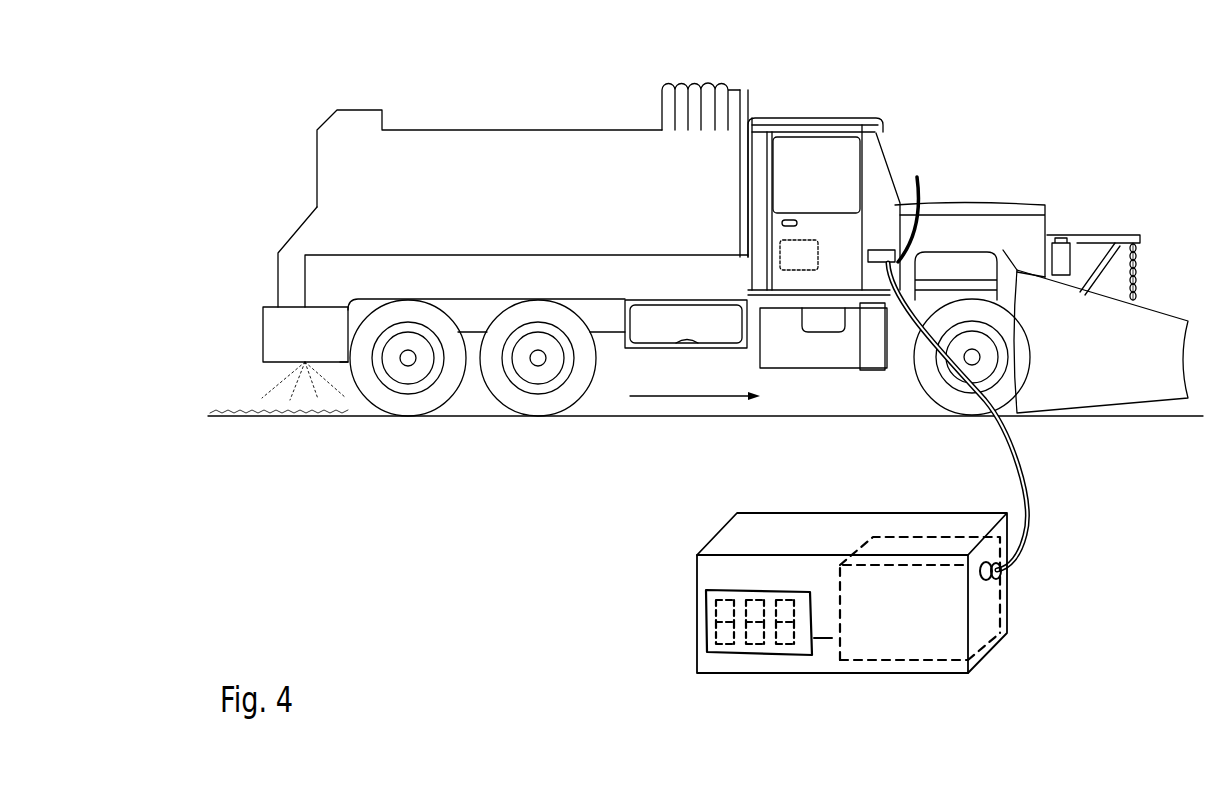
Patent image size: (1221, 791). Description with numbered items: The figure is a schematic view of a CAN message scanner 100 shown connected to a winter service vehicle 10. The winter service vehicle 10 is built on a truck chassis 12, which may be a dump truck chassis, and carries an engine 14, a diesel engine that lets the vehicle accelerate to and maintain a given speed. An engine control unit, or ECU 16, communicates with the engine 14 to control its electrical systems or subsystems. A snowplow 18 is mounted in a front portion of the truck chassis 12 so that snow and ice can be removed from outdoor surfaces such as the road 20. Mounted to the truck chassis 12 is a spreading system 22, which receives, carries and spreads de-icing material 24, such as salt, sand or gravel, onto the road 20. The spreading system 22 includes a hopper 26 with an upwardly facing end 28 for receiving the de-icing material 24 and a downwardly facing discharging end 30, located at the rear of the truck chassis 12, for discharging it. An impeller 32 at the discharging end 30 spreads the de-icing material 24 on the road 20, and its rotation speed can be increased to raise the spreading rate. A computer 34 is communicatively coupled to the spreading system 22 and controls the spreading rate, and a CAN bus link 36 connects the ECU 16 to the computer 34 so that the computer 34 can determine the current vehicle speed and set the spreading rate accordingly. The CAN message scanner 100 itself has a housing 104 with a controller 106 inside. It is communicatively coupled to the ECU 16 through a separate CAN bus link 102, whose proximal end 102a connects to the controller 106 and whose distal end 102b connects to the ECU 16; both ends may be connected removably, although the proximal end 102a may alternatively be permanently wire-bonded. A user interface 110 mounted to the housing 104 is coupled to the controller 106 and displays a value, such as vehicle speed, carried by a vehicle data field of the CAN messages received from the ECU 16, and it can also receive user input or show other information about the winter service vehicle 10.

The winter service vehicle 10 is at (706, 250).
The truck chassis 12 is at (824, 250).
The engine 14 is at (957, 217).
The engine control unit (ECU) 16 is at (887, 323).
The snowplow 18 is at (1121, 394).
The road 20 is at (218, 413).
The spreading system 22 is at (265, 306).
The de-icing material 24 is at (248, 413).
The hopper 26 is at (500, 142).
The upwardly facing end 28 is at (577, 137).
The discharging end 30 is at (302, 303).
The impeller 32 is at (336, 363).
The computer 34 is at (795, 270).
The CAN bus link 36 is at (837, 255).
The CAN message scanner 100 is at (881, 596).
The CAN bus link 102 is at (1020, 473).
The proximal end 102a is at (1005, 577).
The distal end 102b is at (932, 205).
The housing 104 is at (1010, 615).
The controller 106 is at (990, 653).
The user interface 110 is at (760, 653).